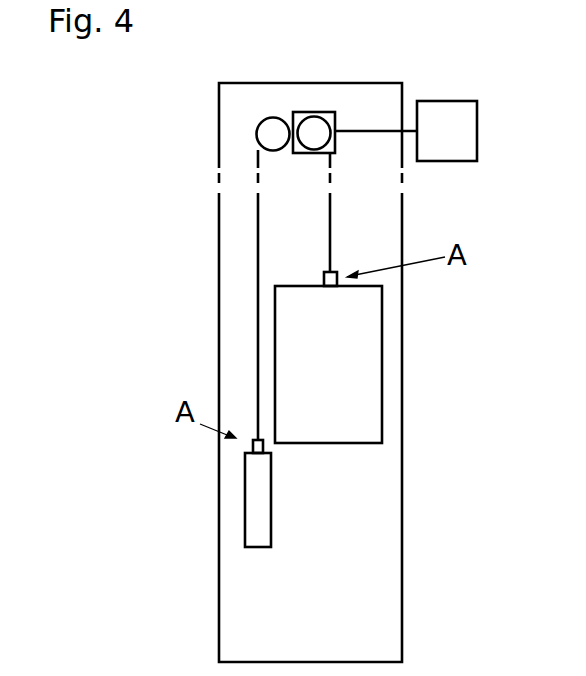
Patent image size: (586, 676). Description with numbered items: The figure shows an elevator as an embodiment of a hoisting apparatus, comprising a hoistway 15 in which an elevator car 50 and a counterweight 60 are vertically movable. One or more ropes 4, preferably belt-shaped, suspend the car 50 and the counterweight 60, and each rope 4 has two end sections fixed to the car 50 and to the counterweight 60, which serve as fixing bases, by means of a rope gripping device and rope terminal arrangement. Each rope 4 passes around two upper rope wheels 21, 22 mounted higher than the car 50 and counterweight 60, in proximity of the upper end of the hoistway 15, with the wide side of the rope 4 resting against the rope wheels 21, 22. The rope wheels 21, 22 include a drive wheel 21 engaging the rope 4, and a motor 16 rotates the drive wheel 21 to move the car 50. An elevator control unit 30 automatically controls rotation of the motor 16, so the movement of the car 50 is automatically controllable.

The rope 4 is at (258, 302).
The hoistway 15 is at (345, 533).
The motor 16 is at (323, 113).
The drive wheel 21 is at (314, 130).
The rope wheel 22 is at (268, 137).
The elevator control unit 30 is at (464, 146).
The elevator car 50 is at (347, 375).
The counterweight 60 is at (245, 493).